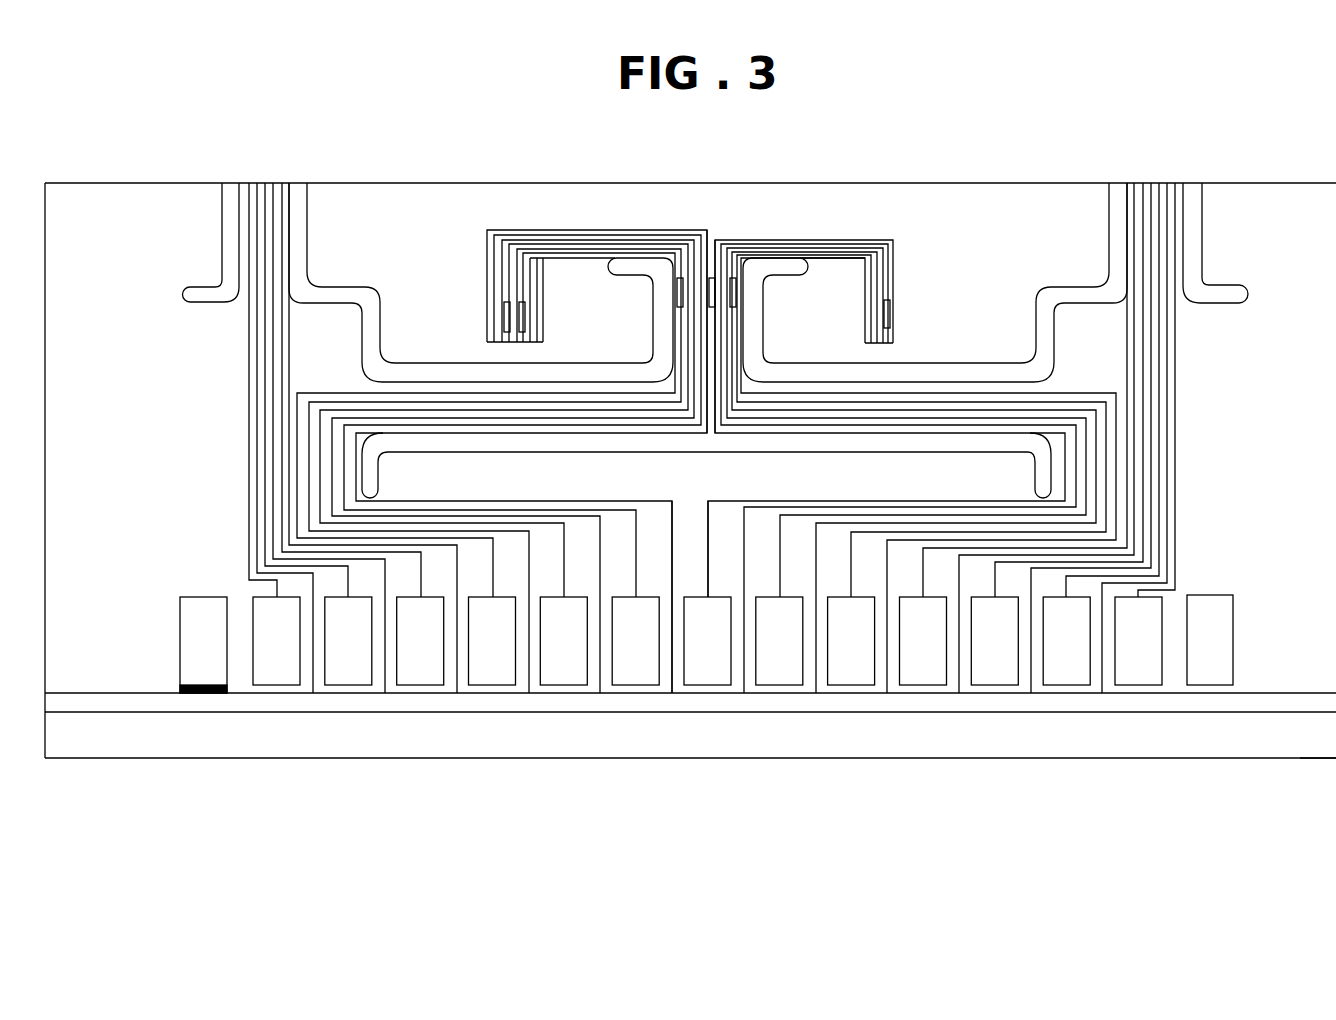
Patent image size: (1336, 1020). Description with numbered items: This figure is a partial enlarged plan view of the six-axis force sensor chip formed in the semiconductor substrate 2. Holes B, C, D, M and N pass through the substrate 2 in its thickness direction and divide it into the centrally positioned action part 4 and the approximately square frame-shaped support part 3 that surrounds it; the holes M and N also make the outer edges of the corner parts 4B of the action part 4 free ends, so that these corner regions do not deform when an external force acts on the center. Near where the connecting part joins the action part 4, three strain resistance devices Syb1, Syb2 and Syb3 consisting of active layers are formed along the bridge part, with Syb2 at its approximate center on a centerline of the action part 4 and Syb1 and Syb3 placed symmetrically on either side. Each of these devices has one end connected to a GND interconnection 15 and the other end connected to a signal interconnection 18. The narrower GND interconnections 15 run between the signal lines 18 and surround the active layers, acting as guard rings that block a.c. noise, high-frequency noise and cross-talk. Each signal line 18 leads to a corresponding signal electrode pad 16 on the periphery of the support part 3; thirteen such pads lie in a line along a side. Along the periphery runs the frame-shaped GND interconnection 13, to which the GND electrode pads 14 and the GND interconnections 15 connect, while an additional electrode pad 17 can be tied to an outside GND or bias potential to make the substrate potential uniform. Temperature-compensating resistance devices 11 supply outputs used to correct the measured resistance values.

The semiconductor substrate 2 is at (1316, 771).
The support part 3 is at (1237, 735).
The action part 4 is at (910, 220).
The corner parts 4B is at (340, 267).
The temperature-compensating resistance devices 11 is at (504, 316).
The GND interconnection 13 is at (1075, 705).
The GND electrode pads 14 is at (203, 638).
The GND interconnections 15 is at (655, 497).
The signal electrode pads 16 is at (565, 667).
The additional electrode pads 17 is at (1222, 637).
The signal interconnection 18 is at (268, 520).
The hole B is at (1196, 233).
The hole C is at (900, 440).
The hole D is at (228, 232).
The hole M is at (1043, 317).
The hole N is at (373, 317).
The strain resistance device Syb1 is at (677, 292).
The strain resistance device Syb2 is at (714, 278).
The strain resistance device Syb3 is at (736, 292).